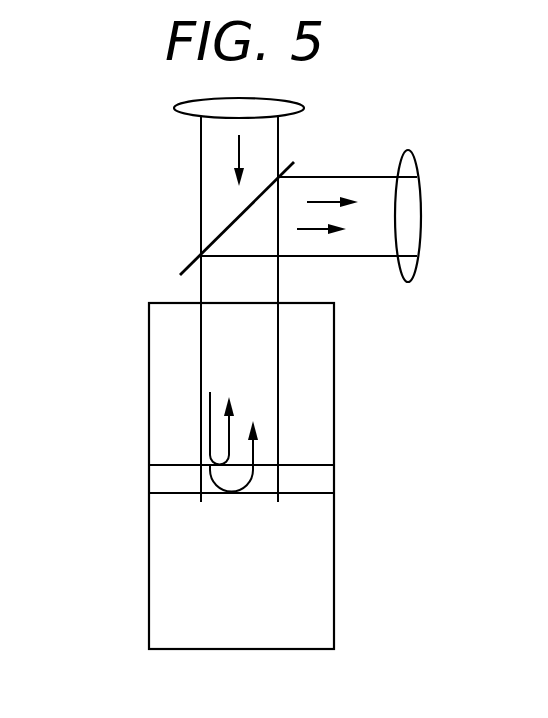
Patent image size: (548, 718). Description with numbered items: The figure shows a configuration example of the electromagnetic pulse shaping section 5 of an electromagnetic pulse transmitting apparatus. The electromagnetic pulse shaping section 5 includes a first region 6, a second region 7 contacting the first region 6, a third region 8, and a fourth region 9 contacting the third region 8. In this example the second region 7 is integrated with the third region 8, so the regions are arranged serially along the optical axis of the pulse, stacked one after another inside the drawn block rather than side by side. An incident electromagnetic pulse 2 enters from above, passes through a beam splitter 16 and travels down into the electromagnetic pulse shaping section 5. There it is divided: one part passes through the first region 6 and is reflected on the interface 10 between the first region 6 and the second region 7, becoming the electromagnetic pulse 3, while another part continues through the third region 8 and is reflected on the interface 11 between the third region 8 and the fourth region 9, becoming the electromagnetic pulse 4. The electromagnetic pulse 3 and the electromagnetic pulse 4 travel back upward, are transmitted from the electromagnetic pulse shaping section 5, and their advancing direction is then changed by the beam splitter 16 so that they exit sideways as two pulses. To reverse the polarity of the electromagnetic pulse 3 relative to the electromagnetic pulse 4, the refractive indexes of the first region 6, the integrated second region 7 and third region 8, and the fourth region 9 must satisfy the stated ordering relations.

The electromagnetic pulse 2 is at (236, 152).
The electromagnetic pulse 3 is at (325, 202).
The electromagnetic pulse 4 is at (316, 229).
The electromagnetic pulse shaping section 5 is at (72, 377).
The first region 6 is at (156, 398).
The second region 7 is at (156, 480).
The third region 8 is at (218, 477).
The fourth region 9 is at (156, 518).
The interface 10 is at (318, 464).
The interface 11 is at (318, 493).
The beam splitter 16 is at (191, 263).